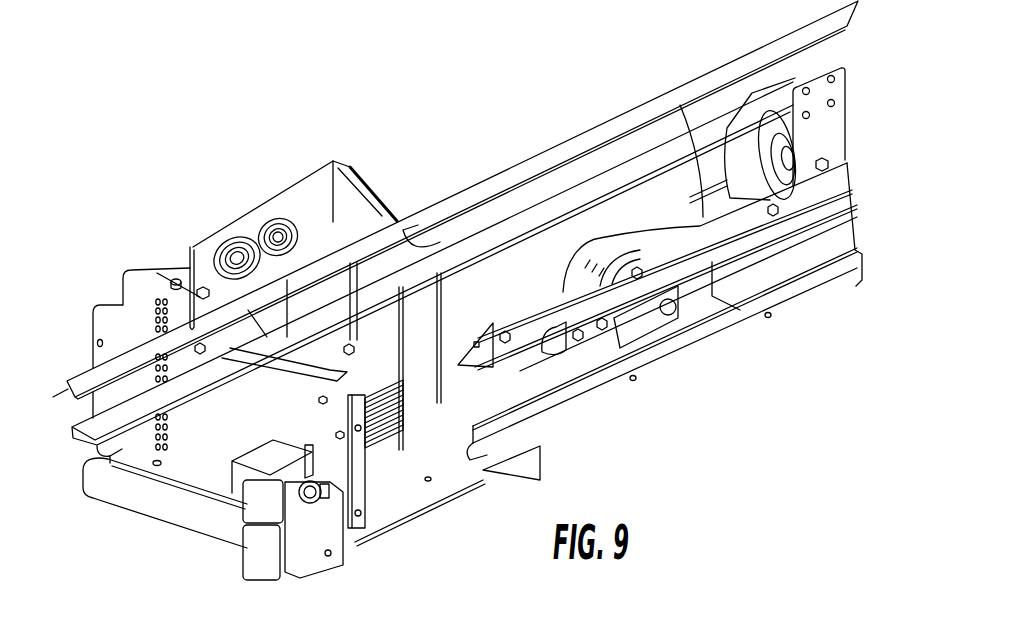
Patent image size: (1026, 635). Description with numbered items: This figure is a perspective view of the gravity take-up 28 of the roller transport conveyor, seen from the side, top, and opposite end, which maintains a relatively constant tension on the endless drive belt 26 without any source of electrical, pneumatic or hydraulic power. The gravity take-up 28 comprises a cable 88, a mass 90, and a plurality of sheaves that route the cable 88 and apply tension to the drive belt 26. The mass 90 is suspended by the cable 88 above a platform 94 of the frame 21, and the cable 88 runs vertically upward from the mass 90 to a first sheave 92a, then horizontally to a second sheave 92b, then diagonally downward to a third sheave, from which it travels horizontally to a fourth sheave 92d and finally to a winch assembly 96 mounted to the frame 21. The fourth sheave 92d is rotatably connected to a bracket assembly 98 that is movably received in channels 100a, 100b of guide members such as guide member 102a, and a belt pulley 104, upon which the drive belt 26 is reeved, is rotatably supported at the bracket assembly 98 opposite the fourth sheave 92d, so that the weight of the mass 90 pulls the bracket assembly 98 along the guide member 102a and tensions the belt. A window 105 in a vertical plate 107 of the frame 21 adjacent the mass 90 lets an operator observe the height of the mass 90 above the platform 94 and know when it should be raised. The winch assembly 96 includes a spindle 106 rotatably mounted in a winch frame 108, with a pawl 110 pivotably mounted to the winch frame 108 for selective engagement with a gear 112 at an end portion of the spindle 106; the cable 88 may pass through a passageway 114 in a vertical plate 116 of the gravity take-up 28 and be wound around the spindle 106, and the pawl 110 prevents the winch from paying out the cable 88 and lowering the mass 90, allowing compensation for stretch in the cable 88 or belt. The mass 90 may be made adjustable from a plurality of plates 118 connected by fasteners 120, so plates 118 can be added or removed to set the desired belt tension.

The frame 21 is at (667, 305).
The endless drive belt 26 is at (455, 223).
The gravity take-up 28 is at (273, 239).
The cable 88 is at (484, 311).
The mass 90 is at (364, 356).
The first sheave 92a is at (278, 204).
The second sheave 92b is at (220, 232).
The fourth sheave 92d is at (693, 320).
The platform 94 is at (420, 513).
The winch assembly 96 is at (232, 561).
The bracket assembly 98 is at (646, 368).
The channel 100a is at (466, 329).
The channel 100b is at (502, 488).
The guide member 102a is at (820, 219).
The belt pulley 104 is at (701, 152).
The window 105 is at (437, 196).
The spindle 106 is at (353, 534).
The vertical plate 107 is at (375, 183).
The winch frame 108 is at (165, 498).
The pawl 110 is at (262, 463).
The gear 112 is at (299, 445).
The passageway 114 is at (356, 523).
The vertical plate 116 is at (308, 455).
The plates 118 is at (398, 432).
The fasteners 120 is at (147, 356).